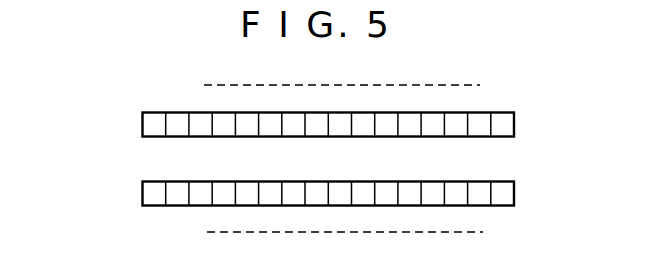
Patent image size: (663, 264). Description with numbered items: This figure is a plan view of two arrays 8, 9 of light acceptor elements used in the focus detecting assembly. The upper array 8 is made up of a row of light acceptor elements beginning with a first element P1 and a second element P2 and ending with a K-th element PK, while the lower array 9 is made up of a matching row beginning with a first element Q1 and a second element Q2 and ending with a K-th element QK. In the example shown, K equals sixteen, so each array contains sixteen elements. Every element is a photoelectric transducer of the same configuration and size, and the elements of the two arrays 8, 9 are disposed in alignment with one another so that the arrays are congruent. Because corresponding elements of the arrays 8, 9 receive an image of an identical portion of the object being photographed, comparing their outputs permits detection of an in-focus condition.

The array of light acceptor elements 8 is at (142, 120).
The array of light acceptor elements 9 is at (142, 191).
The light acceptor element P1 is at (153, 118).
The light acceptor element P2 is at (182, 118).
The light acceptor element PK is at (501, 118).
The light acceptor element Q1 is at (153, 200).
The light acceptor element Q2 is at (179, 200).
The light acceptor element QK is at (501, 200).